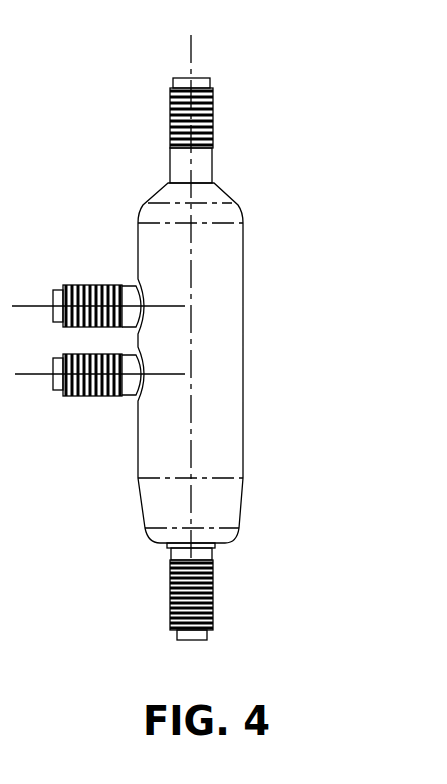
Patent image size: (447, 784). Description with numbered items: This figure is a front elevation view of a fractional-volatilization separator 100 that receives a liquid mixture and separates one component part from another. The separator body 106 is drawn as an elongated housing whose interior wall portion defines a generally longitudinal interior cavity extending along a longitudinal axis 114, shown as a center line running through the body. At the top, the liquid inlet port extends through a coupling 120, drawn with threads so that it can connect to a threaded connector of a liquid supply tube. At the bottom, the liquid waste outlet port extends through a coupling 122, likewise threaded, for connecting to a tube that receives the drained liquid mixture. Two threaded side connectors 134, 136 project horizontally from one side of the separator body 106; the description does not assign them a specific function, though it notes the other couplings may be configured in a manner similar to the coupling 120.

The fractional-volatilization separator 100 is at (246, 47).
The separator body 106 is at (243, 328).
The longitudinal axis 114 is at (190, 437).
The coupling 120 is at (169, 118).
The coupling 122 is at (213, 582).
The lower side port 134 is at (78, 397).
The upper side port 136 is at (83, 284).